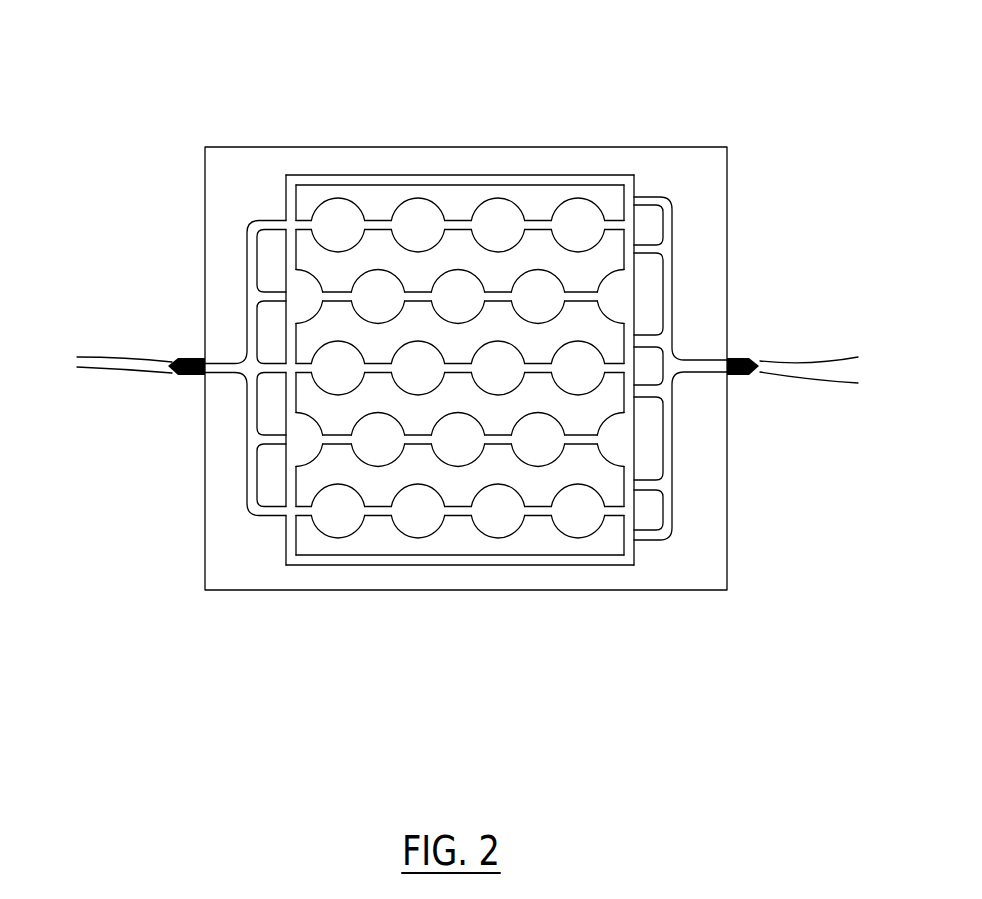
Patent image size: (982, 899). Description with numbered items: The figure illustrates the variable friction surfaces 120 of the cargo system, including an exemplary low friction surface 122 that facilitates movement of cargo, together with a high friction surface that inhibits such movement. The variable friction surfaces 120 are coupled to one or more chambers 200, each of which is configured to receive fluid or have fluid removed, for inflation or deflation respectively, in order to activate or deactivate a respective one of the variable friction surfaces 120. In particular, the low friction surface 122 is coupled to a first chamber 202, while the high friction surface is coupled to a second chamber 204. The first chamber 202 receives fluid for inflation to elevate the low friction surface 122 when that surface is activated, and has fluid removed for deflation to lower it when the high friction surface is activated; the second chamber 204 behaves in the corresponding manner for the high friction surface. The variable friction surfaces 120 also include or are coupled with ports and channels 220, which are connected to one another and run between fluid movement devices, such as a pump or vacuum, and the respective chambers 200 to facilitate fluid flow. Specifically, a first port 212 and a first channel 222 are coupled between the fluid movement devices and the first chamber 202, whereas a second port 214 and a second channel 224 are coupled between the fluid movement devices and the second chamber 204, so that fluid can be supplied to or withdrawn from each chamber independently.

The variable friction surfaces 120 is at (674, 160).
The low friction surface 122 is at (339, 214).
The chambers 200 is at (378, 401).
The first chamber 202 is at (439, 540).
The second chamber 204 is at (539, 526).
The first port 212 is at (186, 378).
The second port 214 is at (743, 378).
The channels 220 is at (463, 368).
The first channel 222 is at (252, 444).
The second channel 224 is at (667, 249).